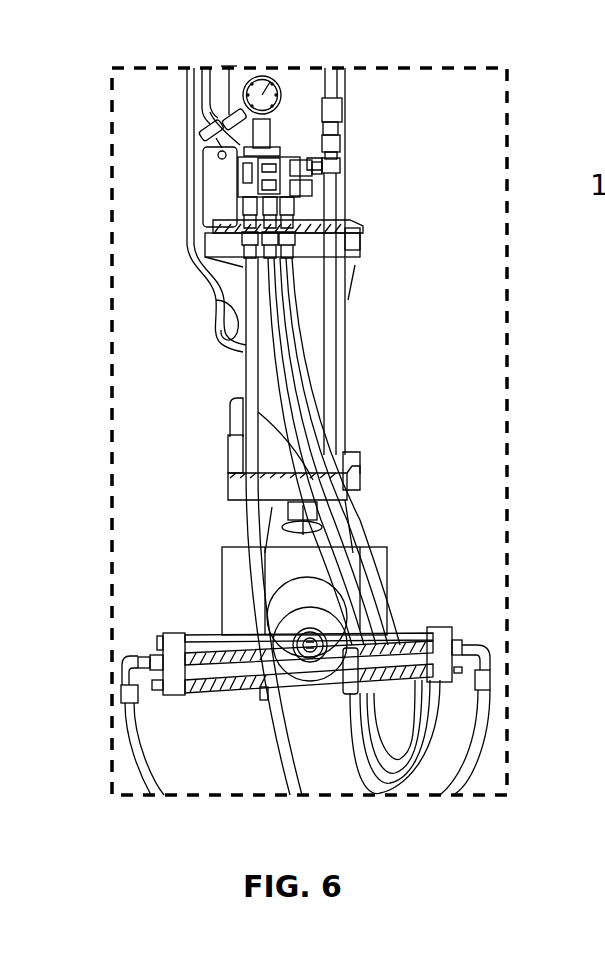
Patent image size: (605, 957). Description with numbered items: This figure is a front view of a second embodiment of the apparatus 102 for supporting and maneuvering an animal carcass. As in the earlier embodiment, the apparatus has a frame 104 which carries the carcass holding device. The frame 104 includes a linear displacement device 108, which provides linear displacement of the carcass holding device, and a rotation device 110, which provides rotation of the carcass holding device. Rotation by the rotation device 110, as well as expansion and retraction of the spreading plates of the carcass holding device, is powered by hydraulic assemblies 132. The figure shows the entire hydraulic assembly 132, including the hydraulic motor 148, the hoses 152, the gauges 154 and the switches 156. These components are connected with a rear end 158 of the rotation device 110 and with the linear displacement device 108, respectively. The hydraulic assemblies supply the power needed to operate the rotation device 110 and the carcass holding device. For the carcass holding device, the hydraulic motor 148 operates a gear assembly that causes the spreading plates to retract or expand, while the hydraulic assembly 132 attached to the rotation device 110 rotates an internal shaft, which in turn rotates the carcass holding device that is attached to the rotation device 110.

The apparatus 102 is at (443, 256).
The frame 104 is at (205, 426).
The linear displacement device 108 is at (343, 193).
The rotation device 110 is at (392, 570).
The hydraulic assembly 132 is at (175, 612).
The hydraulic motor 148 is at (310, 652).
The hoses 152 is at (263, 373).
The gauges 154 is at (262, 90).
The switches 156 is at (240, 112).
The rear end 158 is at (232, 598).